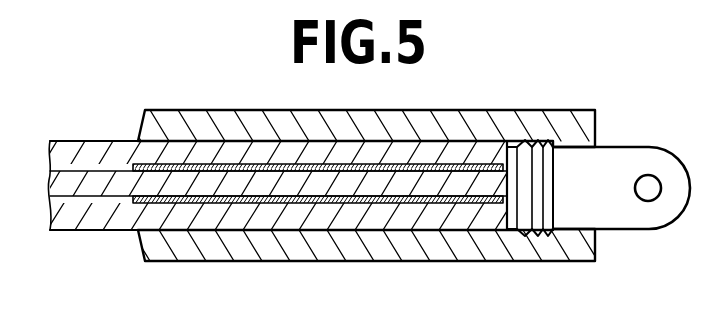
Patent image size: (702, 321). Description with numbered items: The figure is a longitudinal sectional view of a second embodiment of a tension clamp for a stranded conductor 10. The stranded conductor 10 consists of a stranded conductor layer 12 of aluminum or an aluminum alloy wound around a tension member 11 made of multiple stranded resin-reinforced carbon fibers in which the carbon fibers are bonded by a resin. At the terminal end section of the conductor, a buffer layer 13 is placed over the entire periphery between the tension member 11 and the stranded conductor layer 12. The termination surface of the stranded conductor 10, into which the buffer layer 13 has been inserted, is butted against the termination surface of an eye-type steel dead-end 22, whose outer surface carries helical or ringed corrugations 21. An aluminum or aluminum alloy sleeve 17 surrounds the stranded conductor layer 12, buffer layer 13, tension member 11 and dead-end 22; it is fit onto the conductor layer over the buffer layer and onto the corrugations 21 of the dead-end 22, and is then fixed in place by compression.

The stranded conductor 10 is at (82, 143).
The tension member 11 is at (122, 190).
The stranded conductor layer 12 is at (60, 226).
The buffer layer 13 is at (293, 203).
The sleeve 17 is at (402, 250).
The corrugations 21 is at (522, 231).
The eye-type steel dead-end 22 is at (627, 228).